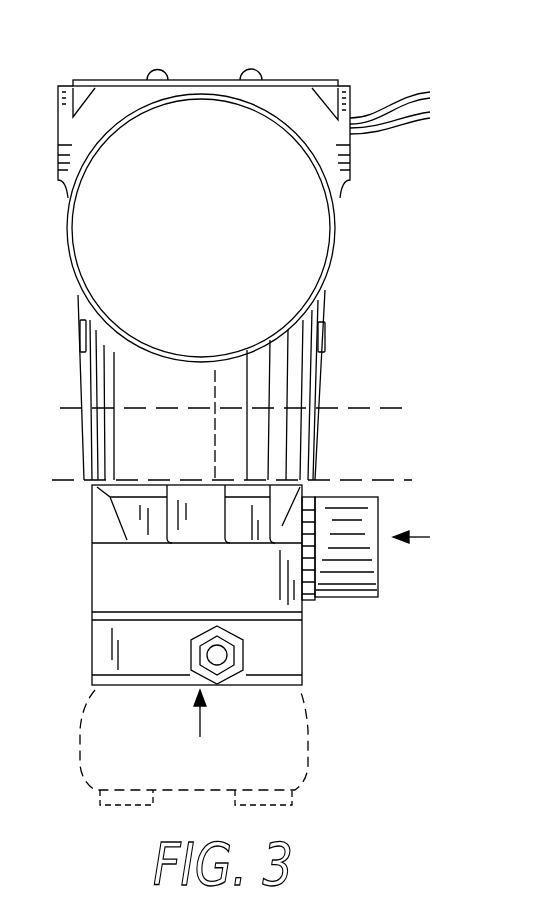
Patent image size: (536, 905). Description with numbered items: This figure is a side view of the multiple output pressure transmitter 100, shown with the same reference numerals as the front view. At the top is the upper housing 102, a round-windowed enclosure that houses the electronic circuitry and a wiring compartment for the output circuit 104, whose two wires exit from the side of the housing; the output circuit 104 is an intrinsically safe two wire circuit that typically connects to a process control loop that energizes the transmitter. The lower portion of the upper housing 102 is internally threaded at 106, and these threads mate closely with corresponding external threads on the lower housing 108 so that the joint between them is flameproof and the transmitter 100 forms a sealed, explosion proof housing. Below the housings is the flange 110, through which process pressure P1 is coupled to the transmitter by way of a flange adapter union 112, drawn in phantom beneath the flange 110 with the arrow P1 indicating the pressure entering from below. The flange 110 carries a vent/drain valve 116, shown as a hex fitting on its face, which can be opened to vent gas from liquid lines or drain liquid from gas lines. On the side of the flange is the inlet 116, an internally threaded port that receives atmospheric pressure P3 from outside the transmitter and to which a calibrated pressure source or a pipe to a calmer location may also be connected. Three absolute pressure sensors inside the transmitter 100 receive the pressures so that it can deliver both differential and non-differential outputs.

The multiple output pressure transmitter 100 is at (255, 407).
The upper housing 102 is at (103, 82).
The output circuit 104 is at (437, 75).
The internal threads 106 is at (427, 402).
The lower housing 108 is at (231, 585).
The flange 110 is at (212, 592).
The flange adapter union 112 is at (275, 718).
The vent/drain valve / inlet 116 is at (250, 653).
The process pressure P1 is at (201, 729).
The pressure P3 is at (431, 538).